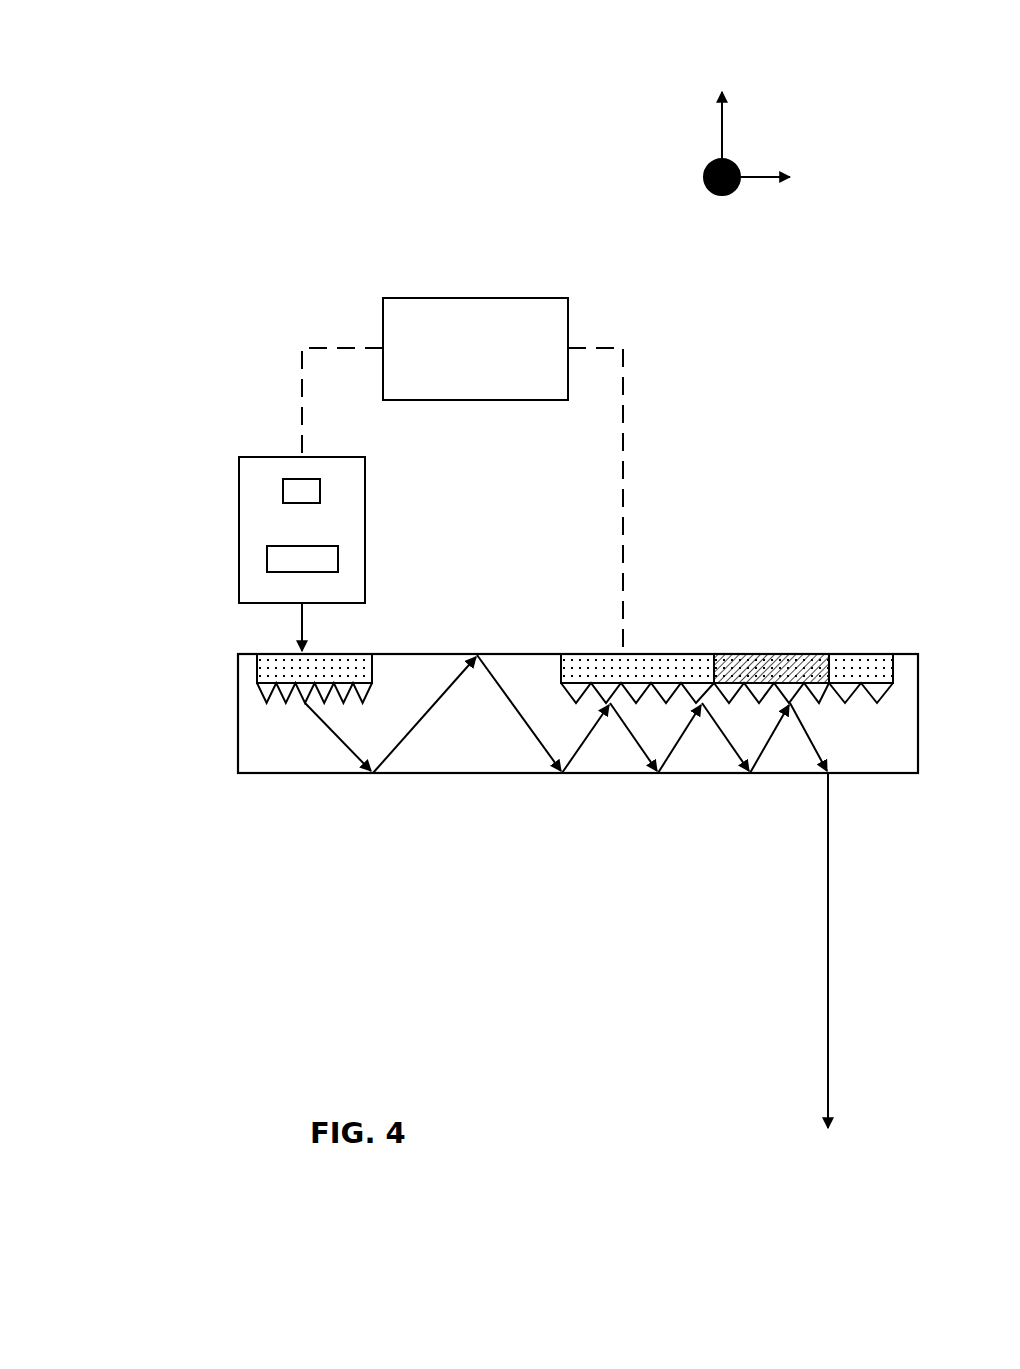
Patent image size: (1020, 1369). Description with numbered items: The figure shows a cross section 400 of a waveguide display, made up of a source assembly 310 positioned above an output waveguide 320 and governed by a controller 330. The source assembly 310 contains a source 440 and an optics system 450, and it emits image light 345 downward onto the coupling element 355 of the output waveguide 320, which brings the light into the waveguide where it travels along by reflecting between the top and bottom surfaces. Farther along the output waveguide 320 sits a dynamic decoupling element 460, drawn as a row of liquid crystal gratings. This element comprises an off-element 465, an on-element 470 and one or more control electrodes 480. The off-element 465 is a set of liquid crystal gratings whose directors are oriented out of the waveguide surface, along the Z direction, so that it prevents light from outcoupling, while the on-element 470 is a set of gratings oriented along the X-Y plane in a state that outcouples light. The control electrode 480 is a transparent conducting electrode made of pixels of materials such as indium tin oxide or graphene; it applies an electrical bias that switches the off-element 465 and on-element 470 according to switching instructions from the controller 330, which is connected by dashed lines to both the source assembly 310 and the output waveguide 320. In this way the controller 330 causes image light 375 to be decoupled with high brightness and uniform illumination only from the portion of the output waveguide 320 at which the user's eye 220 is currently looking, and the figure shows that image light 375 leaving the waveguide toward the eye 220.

The cross section 400 is at (30, 33).
The controller 330 is at (456, 373).
The source assembly 310 is at (295, 529).
The source 440 is at (320, 491).
The optics system 450 is at (424, 574).
The image light 345 is at (298, 641).
The coupling element 355 is at (257, 668).
The output waveguide 320 is at (238, 719).
The dynamic decoupling element 460 is at (636, 680).
The off-element 465 is at (727, 625).
The on-element 470 is at (772, 668).
The control electrode 480 is at (815, 654).
The image light 375 is at (828, 1053).
The eye 220 is at (748, 1217).